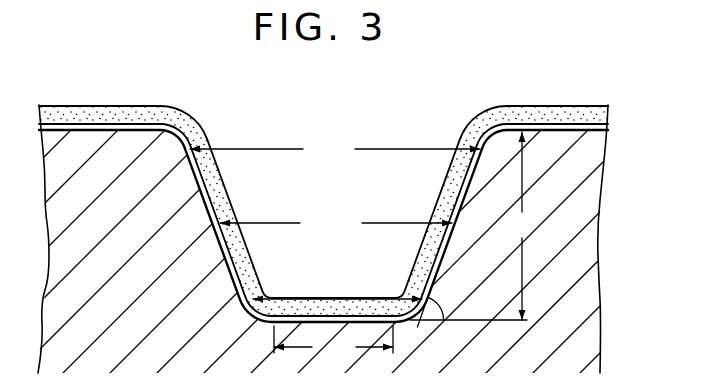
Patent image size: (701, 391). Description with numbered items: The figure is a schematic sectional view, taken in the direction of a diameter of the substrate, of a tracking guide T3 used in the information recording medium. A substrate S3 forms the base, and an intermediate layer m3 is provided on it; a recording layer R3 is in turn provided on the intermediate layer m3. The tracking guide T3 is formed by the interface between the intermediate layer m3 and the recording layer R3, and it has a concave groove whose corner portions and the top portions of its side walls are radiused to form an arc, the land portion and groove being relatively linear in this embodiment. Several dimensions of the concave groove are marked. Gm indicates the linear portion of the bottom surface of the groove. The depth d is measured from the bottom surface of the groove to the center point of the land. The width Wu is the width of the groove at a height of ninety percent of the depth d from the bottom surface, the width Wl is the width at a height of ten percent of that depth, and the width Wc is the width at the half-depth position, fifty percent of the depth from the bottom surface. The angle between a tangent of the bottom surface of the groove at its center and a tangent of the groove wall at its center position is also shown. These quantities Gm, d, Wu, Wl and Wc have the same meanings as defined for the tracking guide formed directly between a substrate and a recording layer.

The tracking guide T3 is at (91, 124).
The intermediate layer m3 is at (147, 124).
The recording layer R3 is at (484, 118).
The substrate S3 is at (583, 237).
The upper groove width Wu is at (335, 149).
The half-depth groove width Wc is at (336, 223).
The lower groove width Wl is at (337, 290).
The linear portion of groove bottom surface Gm is at (333, 342).
The groove depth d is at (520, 226).